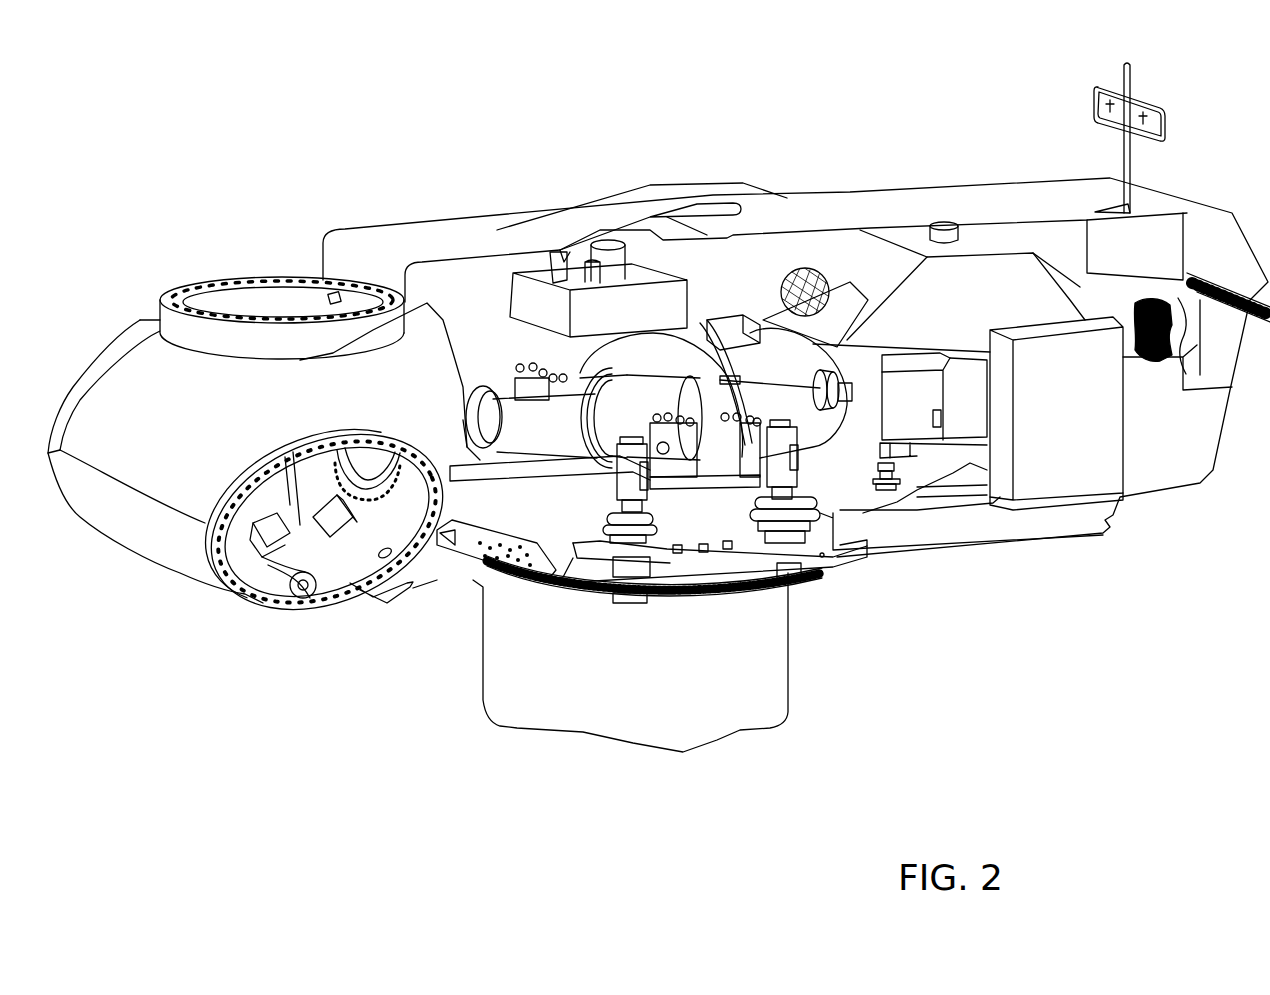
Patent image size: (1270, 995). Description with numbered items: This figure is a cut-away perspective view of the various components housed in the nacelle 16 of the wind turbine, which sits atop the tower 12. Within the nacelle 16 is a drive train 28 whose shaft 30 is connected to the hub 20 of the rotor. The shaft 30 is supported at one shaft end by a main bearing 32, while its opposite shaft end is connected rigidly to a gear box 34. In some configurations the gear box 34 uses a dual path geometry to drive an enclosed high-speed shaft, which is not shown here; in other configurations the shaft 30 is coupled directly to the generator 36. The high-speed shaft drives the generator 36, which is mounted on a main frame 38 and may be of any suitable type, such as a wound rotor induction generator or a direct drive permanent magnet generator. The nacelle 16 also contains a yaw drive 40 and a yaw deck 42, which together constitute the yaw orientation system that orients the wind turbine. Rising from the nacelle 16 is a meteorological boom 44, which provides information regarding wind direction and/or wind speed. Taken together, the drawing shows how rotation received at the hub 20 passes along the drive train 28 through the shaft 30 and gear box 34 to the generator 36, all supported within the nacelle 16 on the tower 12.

The tower 12 is at (720, 713).
The nacelle 16 is at (843, 58).
The hub 20 is at (220, 343).
The drive train 28 is at (465, 296).
The shaft 30 is at (510, 410).
The main bearing 32 is at (505, 420).
The gear box 34 is at (712, 365).
The generator 36 is at (908, 423).
The main frame 38 is at (1053, 540).
The yaw drive 40 is at (630, 560).
The yaw deck 42 is at (828, 560).
The meteorological boom 44 is at (1165, 112).